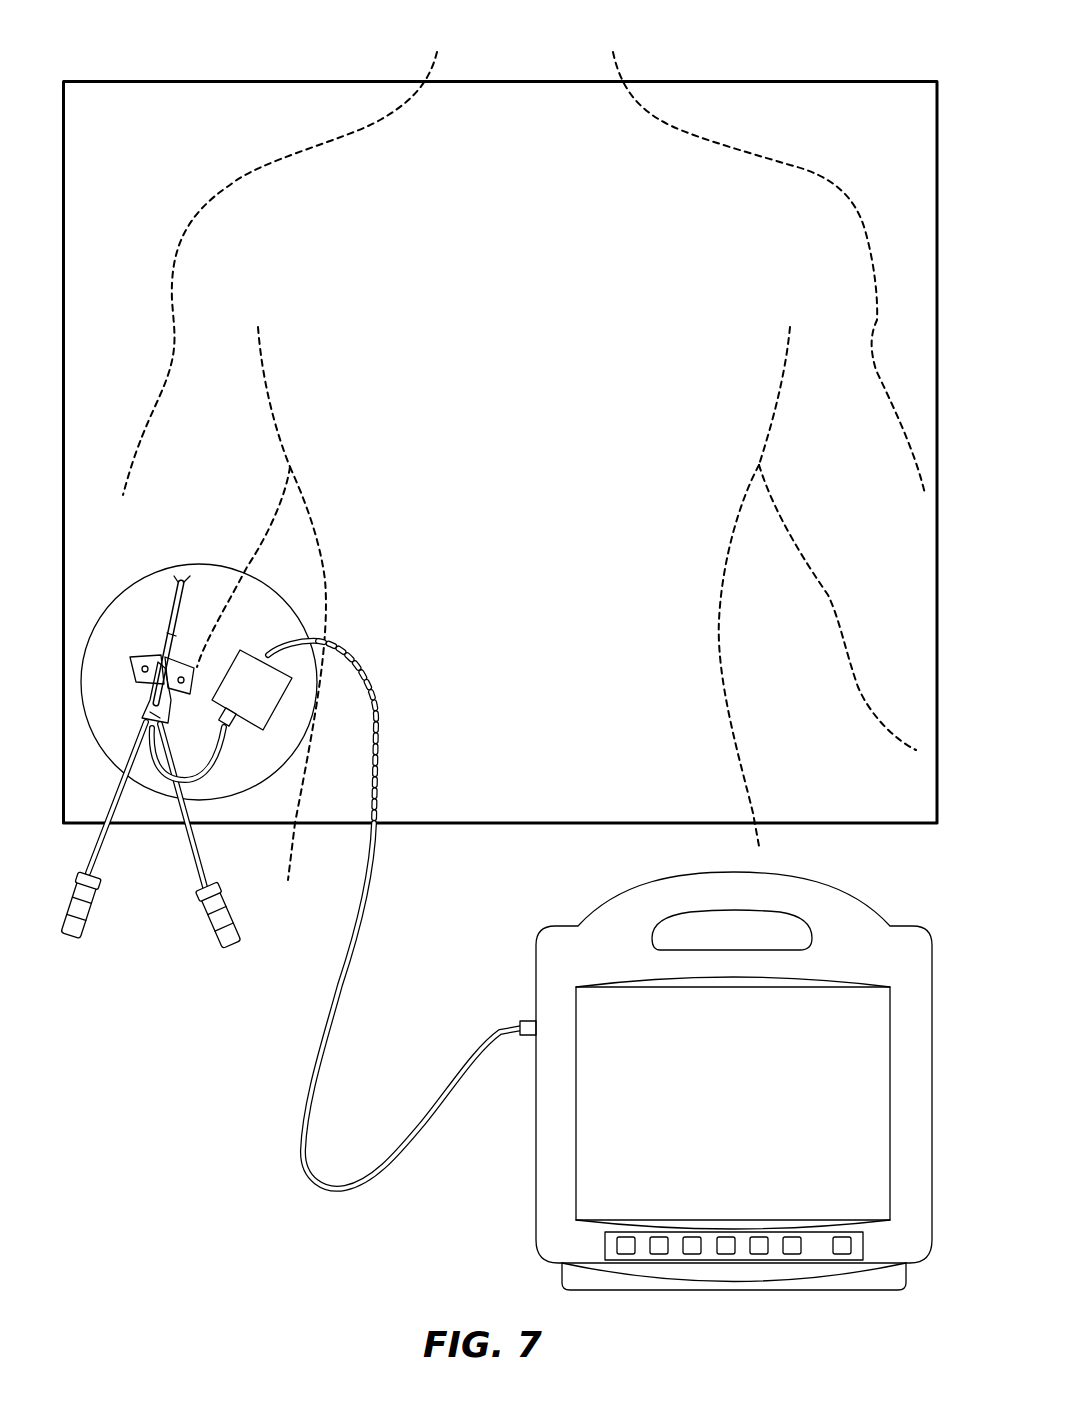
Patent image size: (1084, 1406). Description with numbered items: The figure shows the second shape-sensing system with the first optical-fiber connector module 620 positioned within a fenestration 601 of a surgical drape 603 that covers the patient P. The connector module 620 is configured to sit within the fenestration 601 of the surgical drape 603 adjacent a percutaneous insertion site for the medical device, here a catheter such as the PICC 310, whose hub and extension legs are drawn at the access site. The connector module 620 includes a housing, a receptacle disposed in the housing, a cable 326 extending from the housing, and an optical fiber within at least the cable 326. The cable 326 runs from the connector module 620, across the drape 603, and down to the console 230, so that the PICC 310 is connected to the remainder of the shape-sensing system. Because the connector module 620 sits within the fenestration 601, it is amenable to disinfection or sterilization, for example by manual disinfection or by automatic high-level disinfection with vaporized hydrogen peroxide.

The surgical drape 603 is at (280, 79).
The patient P is at (682, 108).
The fenestration 601 is at (259, 597).
The PICC 310 is at (130, 970).
The first optical-fiber connector module 620 is at (257, 745).
The cable 326 is at (392, 716).
The console 230 is at (490, 1146).